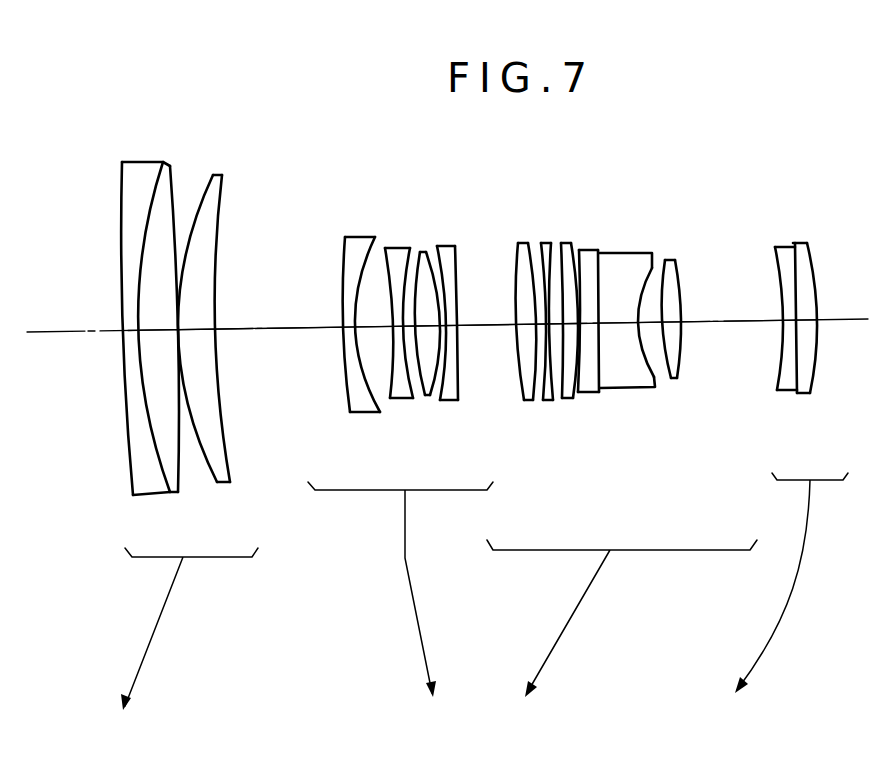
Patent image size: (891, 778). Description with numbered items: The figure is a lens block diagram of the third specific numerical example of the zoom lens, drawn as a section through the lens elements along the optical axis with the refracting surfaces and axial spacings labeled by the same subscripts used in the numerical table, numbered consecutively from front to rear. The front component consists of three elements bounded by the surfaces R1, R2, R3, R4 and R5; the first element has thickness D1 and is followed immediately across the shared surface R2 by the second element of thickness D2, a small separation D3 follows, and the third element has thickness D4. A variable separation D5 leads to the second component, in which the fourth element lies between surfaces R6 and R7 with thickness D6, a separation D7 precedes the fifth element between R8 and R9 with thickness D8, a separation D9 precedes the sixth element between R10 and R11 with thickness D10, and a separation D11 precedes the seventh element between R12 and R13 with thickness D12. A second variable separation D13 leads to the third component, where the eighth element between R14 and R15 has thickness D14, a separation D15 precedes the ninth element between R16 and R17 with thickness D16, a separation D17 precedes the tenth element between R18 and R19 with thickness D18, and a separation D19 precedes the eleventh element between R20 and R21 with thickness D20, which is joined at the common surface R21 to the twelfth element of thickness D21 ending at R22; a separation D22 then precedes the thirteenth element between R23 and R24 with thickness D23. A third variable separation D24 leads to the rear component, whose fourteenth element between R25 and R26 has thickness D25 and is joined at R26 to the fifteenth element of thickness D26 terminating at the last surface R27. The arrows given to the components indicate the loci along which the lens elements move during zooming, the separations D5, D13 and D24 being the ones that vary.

The radius of curvature of the first lens surface R1 is at (123, 200).
The radius of curvature of the second lens surface R2 is at (152, 200).
The radius of curvature of the third lens surface R3 is at (173, 195).
The radius of curvature of the fourth lens surface R4 is at (201, 200).
The radius of curvature of the fifth lens surface R5 is at (219, 200).
The radius of curvature of the sixth lens surface R6 is at (345, 270).
The radius of curvature of the seventh lens surface R7 is at (362, 268).
The radius of curvature of the eighth lens surface R8 is at (388, 270).
The radius of curvature of the ninth lens surface R9 is at (408, 262).
The radius of curvature of the tenth lens surface R10 is at (418, 270).
The radius of curvature of the eleventh lens surface R11 is at (430, 265).
The radius of curvature of the twelfth lens surface R12 is at (440, 270).
The radius of curvature of the thirteenth lens surface R13 is at (458, 268).
The radius of curvature of the fourteenth lens surface R14 is at (517, 265).
The radius of curvature of the fifteenth lens surface R15 is at (530, 258).
The radius of curvature of the sixteenth lens surface R16 is at (542, 262).
The radius of curvature of the seventeenth lens surface R17 is at (552, 258).
The radius of curvature of the eighteenth lens surface R18 is at (562, 260).
The radius of curvature of the nineteenth lens surface R19 is at (572, 255).
The radius of curvature of the twentieth lens surface R20 is at (580, 262).
The radius of curvature of the twenty-first lens surface R21 is at (598, 262).
The radius of curvature of the twenty-second lens surface R22 is at (651, 265).
The radius of curvature of the twenty-third lens surface R23 is at (665, 272).
The radius of curvature of the twenty-fourth lens surface R24 is at (676, 272).
The radius of curvature of the twenty-fifth lens surface R25 is at (776, 265).
The radius of curvature of the twenty-sixth lens surface R26 is at (795, 262).
The radius of curvature of the twenty-seventh lens surface R27 is at (808, 262).
The axial thickness of the first lens element D1 is at (133, 331).
The axial thickness of the second lens element D2 is at (158, 331).
The axial separation between the second and third lens elements D3 is at (178, 331).
The axial thickness of the third lens element D4 is at (197, 331).
The variable axial separation between the first and second components D5 is at (263, 333).
The axial thickness of the fourth lens element D6 is at (347, 328).
The axial separation between the fourth and fifth lens elements D7 is at (372, 328).
The axial thickness of the fifth lens element D8 is at (394, 328).
The axial separation between the fifth and sixth lens elements D9 is at (407, 328).
The axial thickness of the sixth lens element D10 is at (427, 328).
The axial separation between the sixth and seventh lens elements D11 is at (443, 328).
The axial thickness of the seventh lens element D12 is at (452, 328).
The variable axial separation between the second and third components D13 is at (490, 325).
The axial thickness of the eighth lens element D14 is at (526, 322).
The axial separation between the eighth and ninth lens elements D15 is at (540, 322).
The axial thickness of the ninth lens element D16 is at (547, 322).
The axial separation between the ninth and tenth lens elements D17 is at (556, 322).
The axial thickness of the tenth lens element D18 is at (570, 322).
The axial separation between the tenth and eleventh lens elements D19 is at (579, 322).
The axial thickness of the eleventh lens element D20 is at (590, 322).
The axial thickness of the twelfth lens element D21 is at (620, 322).
The axial separation between the twelfth and thirteenth lens elements D22 is at (657, 321).
The axial thickness of the thirteenth lens element D23 is at (671, 321).
The variable axial separation between the third and fourth components D24 is at (713, 322).
The axial thickness of the fourteenth lens element D25 is at (786, 392).
The axial thickness of the fifteenth lens element D26 is at (803, 396).